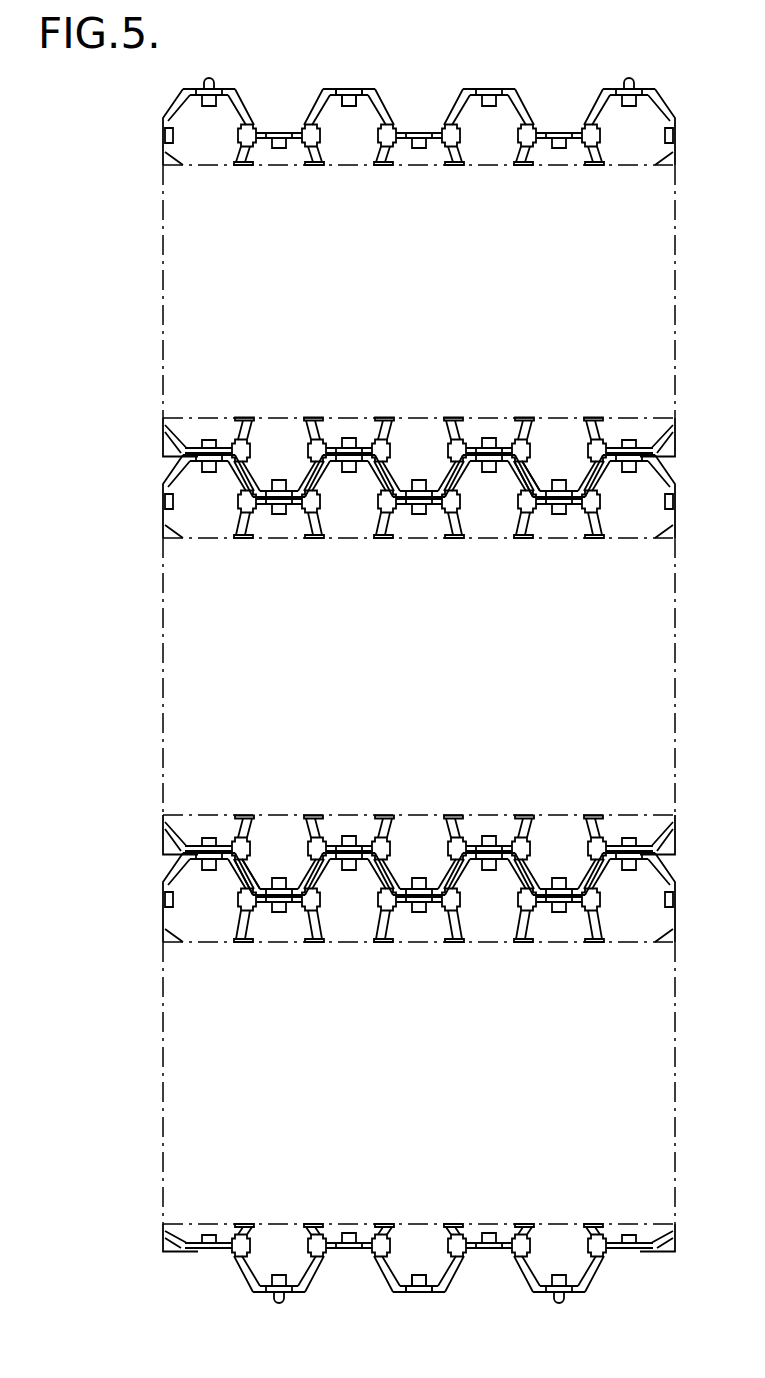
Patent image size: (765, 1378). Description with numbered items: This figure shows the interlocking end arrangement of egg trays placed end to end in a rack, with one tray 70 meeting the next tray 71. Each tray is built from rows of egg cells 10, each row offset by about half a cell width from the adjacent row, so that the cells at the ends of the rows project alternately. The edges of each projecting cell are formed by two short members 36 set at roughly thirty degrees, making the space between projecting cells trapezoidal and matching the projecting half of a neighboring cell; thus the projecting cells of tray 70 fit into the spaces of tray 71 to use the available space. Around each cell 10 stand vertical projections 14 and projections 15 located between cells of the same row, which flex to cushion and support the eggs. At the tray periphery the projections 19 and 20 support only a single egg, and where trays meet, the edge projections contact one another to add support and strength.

The egg cell 10 is at (436, 456).
The vertical projection 14 is at (381, 152).
The vertical projection between cells 15 is at (278, 129).
The peripheral projection 19 is at (347, 88).
The peripheral projection 20 is at (163, 136).
The short member 36 is at (533, 486).
The tray 70 is at (450, 1080).
The tray 71 is at (450, 691).